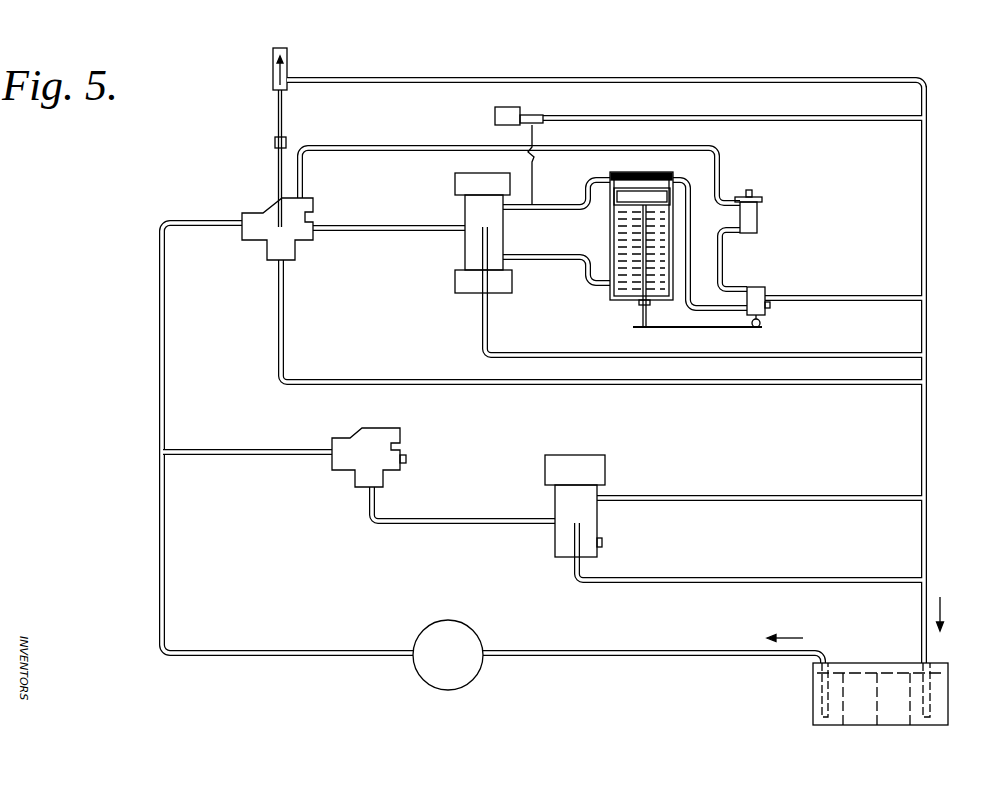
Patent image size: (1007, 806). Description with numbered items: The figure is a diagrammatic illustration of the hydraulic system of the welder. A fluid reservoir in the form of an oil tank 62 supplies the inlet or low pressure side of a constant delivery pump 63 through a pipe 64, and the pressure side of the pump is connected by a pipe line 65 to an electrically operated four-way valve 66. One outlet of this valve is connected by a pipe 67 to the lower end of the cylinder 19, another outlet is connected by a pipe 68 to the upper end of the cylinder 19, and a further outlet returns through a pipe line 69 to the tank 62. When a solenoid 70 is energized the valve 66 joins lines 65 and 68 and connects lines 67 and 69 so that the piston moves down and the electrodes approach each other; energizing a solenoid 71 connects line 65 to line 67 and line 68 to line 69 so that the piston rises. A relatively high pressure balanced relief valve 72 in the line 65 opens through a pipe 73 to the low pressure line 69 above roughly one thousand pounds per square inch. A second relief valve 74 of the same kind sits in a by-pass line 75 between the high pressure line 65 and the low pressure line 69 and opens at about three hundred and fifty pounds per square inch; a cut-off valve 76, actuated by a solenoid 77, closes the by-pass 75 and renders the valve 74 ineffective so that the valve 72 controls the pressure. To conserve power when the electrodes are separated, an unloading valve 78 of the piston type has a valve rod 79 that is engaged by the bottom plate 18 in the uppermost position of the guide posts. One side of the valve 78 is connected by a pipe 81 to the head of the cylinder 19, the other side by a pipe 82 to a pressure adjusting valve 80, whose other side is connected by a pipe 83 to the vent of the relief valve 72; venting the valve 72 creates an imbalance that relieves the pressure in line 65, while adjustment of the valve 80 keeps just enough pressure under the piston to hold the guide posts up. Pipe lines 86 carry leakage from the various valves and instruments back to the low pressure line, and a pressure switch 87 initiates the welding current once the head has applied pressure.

The bottom plate 18 is at (703, 329).
The cylinder 19 is at (611, 232).
The oil tank 62 is at (813, 697).
The constant delivery pump 63 is at (457, 668).
The pipe 64 is at (612, 650).
The pipe line 65 is at (394, 225).
The four-way valve 66 is at (465, 243).
The pipe 67 is at (553, 260).
The pipe 68 is at (555, 209).
The pipe line 69 is at (483, 326).
The solenoid 70 is at (468, 174).
The solenoid 71 is at (513, 287).
The relief valve 72 is at (268, 248).
The pipe 73 is at (285, 328).
The relief valve 74 is at (373, 440).
The by-pass line 75 is at (230, 456).
The cut-off valve 76 is at (596, 525).
The solenoid 77 is at (602, 468).
The unloading valve 78 is at (760, 288).
The valve rod 79 is at (762, 323).
The pressure adjusting valve 80 is at (757, 220).
The pipe 81 is at (692, 244).
The pipe 82 is at (722, 258).
The pipe 83 is at (665, 148).
The pipe lines 86 is at (795, 78).
The pressure switch 87 is at (495, 117).